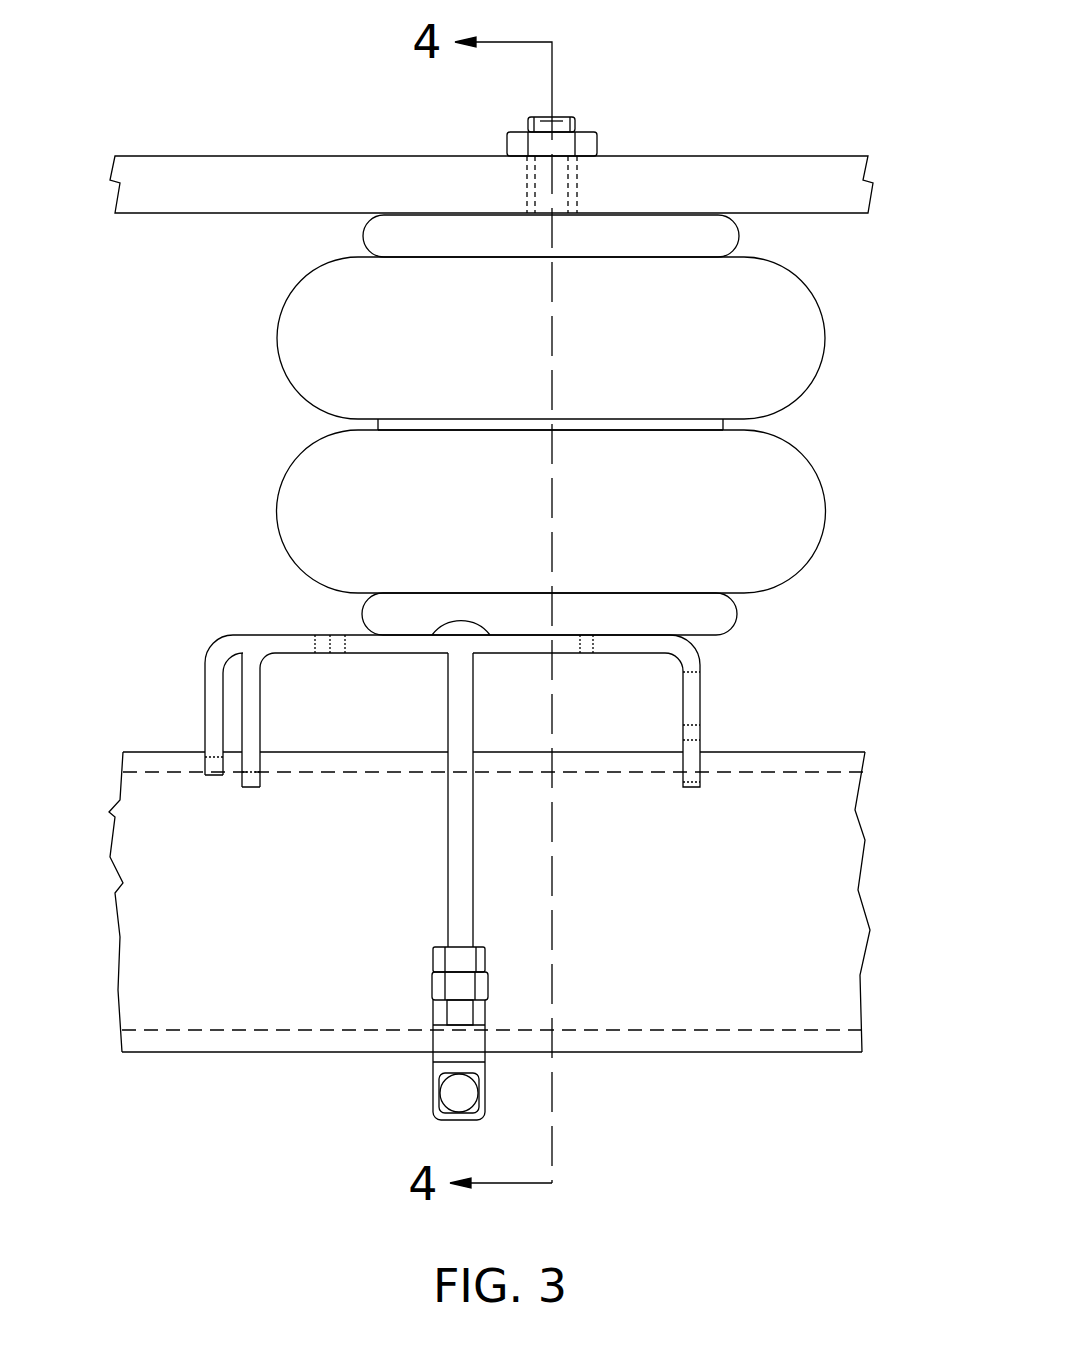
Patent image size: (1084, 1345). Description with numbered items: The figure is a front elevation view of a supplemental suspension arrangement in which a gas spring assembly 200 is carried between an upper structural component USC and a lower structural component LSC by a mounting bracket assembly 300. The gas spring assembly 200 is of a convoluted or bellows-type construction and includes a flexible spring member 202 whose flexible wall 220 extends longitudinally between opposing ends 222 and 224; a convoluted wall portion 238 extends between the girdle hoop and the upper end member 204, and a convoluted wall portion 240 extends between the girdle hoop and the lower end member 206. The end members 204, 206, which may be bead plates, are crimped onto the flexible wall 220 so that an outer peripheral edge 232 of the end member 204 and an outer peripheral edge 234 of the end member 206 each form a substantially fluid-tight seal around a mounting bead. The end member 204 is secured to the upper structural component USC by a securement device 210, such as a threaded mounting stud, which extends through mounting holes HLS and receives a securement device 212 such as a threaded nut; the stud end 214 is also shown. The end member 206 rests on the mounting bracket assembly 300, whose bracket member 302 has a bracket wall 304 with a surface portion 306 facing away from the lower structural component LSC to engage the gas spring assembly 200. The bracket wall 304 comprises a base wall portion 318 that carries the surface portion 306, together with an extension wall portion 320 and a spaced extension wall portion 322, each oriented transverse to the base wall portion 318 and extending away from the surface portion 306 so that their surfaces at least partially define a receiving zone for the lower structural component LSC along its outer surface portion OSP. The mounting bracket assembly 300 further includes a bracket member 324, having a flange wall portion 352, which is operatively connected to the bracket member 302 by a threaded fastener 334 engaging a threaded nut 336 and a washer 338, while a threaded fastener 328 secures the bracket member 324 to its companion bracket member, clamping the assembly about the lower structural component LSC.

The gas spring assembly 200 is at (184, 321).
The flexible spring member 202 is at (275, 432).
The end member 204 is at (403, 215).
The end member 206 is at (736, 632).
The securement device 210 is at (580, 128).
The securement device 212 is at (507, 147).
The mounting stud 214 is at (556, 112).
The flexible wall 220 is at (818, 402).
The end 222 is at (850, 288).
The end 224 is at (845, 589).
The outer peripheral edge 232 is at (740, 234).
The outer peripheral edge 234 is at (737, 613).
The convoluted wall portion 238 is at (805, 340).
The convoluted wall portion 240 is at (805, 515).
The mounting bracket assembly 300 is at (190, 637).
The bracket member 302 is at (235, 624).
The bracket wall 304 is at (362, 668).
The surface portion 306 is at (295, 633).
The base wall portion 318 is at (408, 654).
The extension wall portion 320 is at (697, 690).
The extension wall portion 322 is at (252, 710).
The bracket member 324 is at (428, 1046).
The threaded fastener 328 is at (453, 1097).
The threaded fastener 334 is at (455, 845).
The threaded nut 336 is at (440, 990).
The washer 338 is at (455, 975).
The flange wall portion 352 is at (455, 957).
The upper structural component USC is at (812, 172).
The mounting holes HLS is at (577, 183).
The lower structural component LSC is at (209, 1036).
The outer surface portion OSP is at (157, 1052).